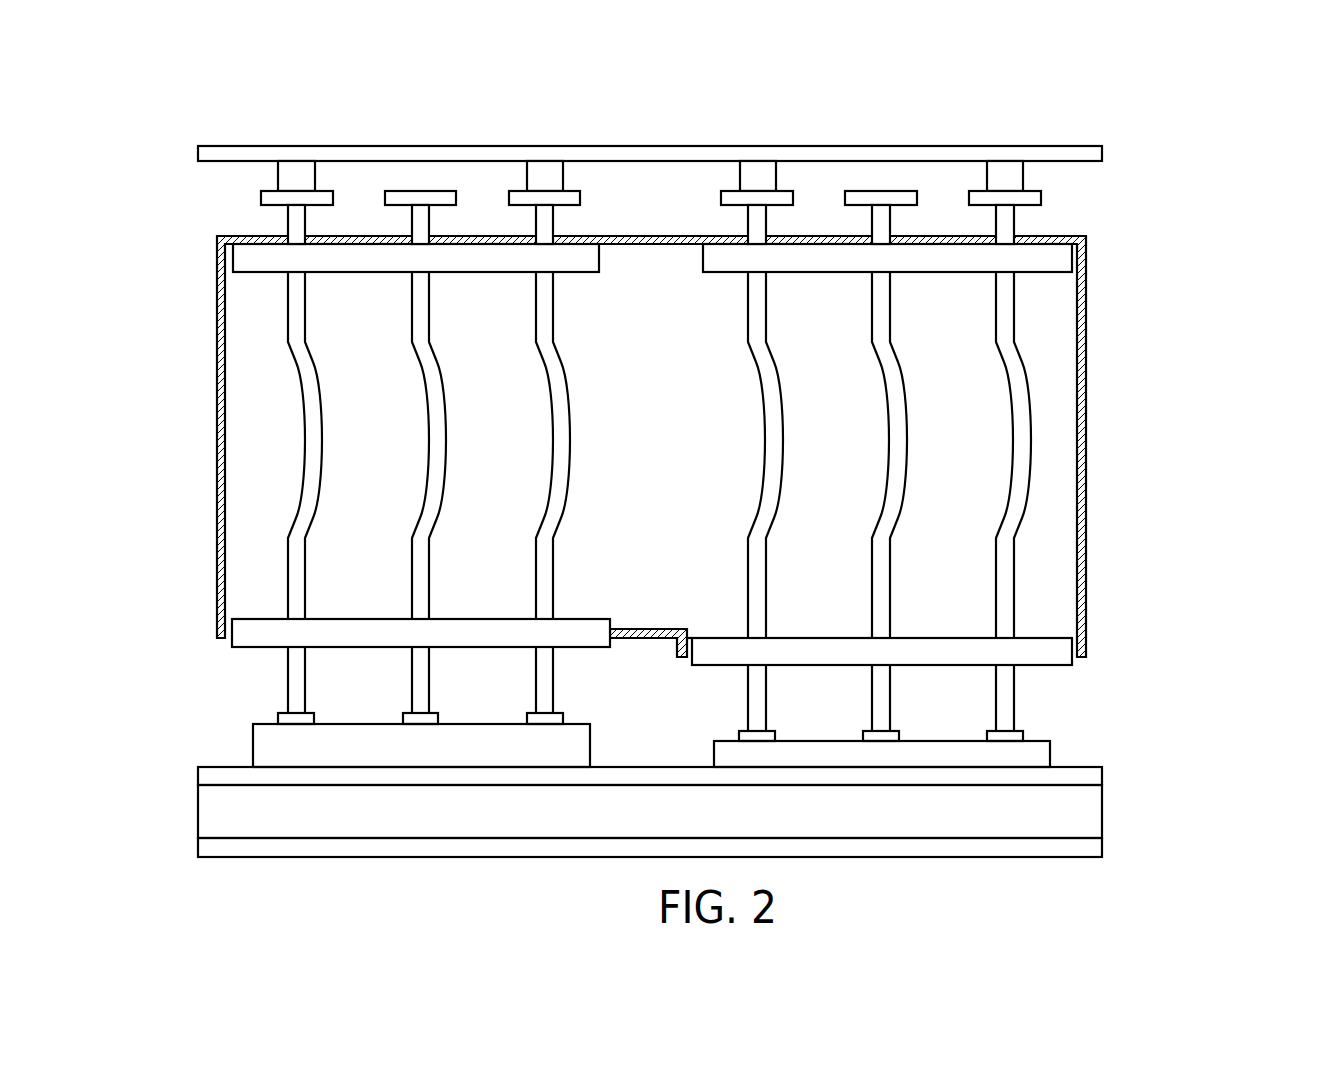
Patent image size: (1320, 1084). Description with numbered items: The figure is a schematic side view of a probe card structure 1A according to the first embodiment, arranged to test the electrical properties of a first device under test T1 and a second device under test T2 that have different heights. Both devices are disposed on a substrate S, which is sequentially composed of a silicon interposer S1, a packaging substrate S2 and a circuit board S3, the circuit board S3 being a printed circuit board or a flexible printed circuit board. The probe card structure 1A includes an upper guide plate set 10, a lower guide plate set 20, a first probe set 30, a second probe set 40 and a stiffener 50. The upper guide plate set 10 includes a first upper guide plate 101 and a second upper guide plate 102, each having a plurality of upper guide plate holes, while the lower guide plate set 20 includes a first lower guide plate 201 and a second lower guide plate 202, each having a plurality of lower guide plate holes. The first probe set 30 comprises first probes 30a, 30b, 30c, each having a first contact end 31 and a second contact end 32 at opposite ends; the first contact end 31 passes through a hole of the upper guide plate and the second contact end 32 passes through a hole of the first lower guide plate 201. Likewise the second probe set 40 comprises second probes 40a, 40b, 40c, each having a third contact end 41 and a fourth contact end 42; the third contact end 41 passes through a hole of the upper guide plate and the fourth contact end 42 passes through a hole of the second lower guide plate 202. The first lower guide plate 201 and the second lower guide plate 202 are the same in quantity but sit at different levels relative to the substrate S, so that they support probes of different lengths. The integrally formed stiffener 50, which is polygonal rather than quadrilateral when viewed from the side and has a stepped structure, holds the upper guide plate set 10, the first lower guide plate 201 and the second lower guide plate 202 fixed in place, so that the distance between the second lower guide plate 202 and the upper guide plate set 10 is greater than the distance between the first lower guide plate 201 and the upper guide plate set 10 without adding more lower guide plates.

The probe card structure 1A is at (1116, 116).
The upper guide plate set 10 is at (1268, 215).
The first upper guide plate 101 is at (588, 262).
The second upper guide plate 102 is at (715, 262).
The lower guide plate set 20 is at (1268, 563).
The first lower guide plate 201 is at (482, 628).
The second lower guide plate 202 is at (942, 653).
The first probe set 30 is at (135, 375).
The first probe 30a is at (310, 400).
The first probe 30b is at (438, 439).
The first probe 30c is at (562, 466).
The first contact end 31 is at (292, 220).
The second contact end 32 is at (295, 678).
The second probe set 40 is at (1158, 375).
The second probe 40a is at (772, 398).
The second probe 40b is at (902, 433).
The second probe 40c is at (1022, 479).
The third contact end 41 is at (1008, 220).
The fourth contact end 42 is at (1007, 687).
The stiffener 50 is at (1083, 322).
The substrate S is at (1170, 752).
The silicon interposer S1 is at (1102, 776).
The packaging substrate S2 is at (1102, 811).
The circuit board S3 is at (1102, 846).
The first device under test T1 is at (260, 745).
The second device under test T2 is at (1042, 755).